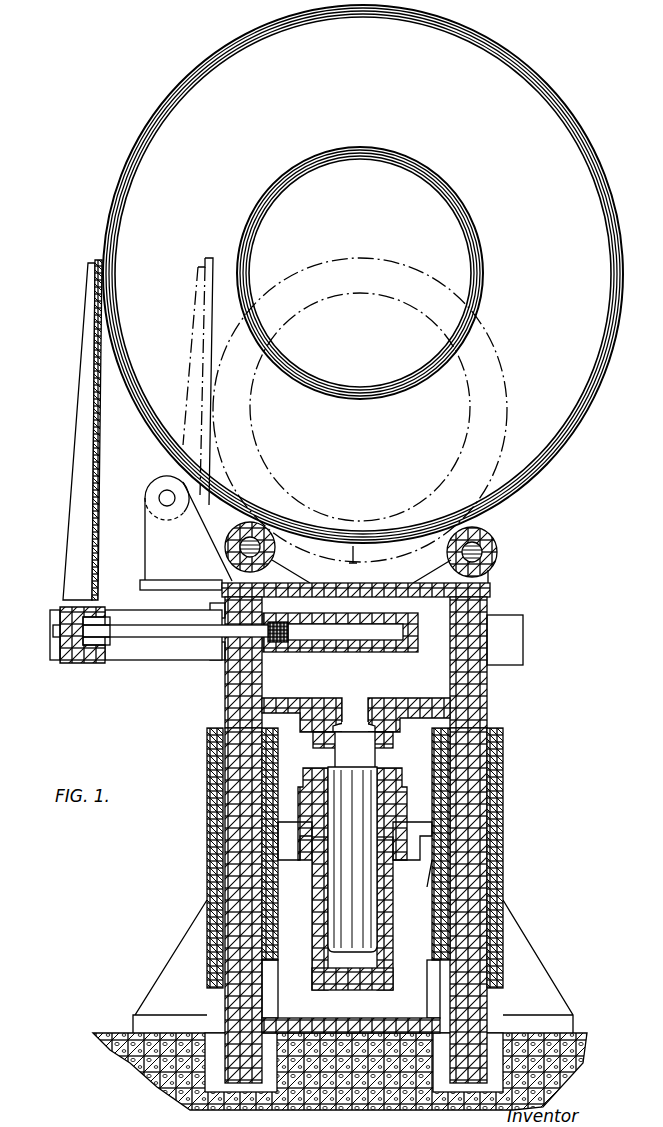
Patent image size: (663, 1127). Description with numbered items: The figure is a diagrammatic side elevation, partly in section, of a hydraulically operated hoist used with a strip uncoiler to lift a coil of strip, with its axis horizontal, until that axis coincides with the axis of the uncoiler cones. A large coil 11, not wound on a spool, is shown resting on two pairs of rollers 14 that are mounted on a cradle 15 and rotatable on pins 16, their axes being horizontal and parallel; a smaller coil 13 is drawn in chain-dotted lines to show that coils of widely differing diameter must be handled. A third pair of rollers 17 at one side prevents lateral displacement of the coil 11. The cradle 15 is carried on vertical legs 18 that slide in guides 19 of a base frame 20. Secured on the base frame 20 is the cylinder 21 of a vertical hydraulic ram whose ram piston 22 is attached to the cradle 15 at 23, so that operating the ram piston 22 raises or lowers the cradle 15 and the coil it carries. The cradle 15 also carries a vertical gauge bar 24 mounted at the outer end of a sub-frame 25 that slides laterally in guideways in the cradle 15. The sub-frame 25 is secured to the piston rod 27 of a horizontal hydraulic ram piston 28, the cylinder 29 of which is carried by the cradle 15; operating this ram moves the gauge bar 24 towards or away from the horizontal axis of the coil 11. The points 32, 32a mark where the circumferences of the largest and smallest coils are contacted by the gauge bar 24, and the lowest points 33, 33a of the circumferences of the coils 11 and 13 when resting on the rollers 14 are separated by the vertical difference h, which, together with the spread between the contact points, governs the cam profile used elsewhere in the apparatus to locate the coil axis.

The coil 11 is at (510, 57).
The smaller coil 13 is at (360, 257).
The rollers 14 is at (226, 544).
The cradle 15 is at (493, 590).
The pins 16 is at (241, 549).
The third pair of rollers 17 is at (146, 494).
The vertical legs 18 is at (237, 844).
The guides 19 is at (217, 813).
The base frame 20 is at (373, 1023).
The cylinder 21 is at (320, 903).
The ram piston 22 is at (346, 874).
The attachment point 23 is at (344, 682).
The vertical gauge bar 24 is at (92, 418).
The sub-frame 25 is at (147, 646).
The piston rod 27 is at (185, 628).
The horizontal hydraulic ram piston 28 is at (288, 644).
The cylinder 29 is at (352, 645).
The contact point 32 is at (103, 284).
The contact point 32a is at (212, 410).
The lowest point 33 is at (372, 546).
The lowest point 33a is at (366, 563).
The vertical difference h is at (352, 552).